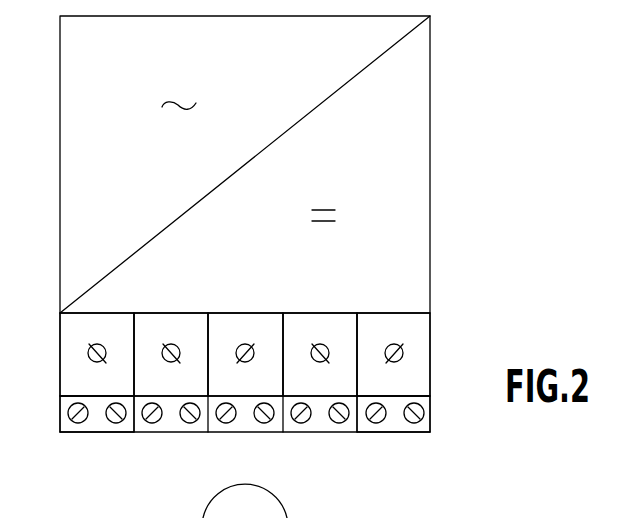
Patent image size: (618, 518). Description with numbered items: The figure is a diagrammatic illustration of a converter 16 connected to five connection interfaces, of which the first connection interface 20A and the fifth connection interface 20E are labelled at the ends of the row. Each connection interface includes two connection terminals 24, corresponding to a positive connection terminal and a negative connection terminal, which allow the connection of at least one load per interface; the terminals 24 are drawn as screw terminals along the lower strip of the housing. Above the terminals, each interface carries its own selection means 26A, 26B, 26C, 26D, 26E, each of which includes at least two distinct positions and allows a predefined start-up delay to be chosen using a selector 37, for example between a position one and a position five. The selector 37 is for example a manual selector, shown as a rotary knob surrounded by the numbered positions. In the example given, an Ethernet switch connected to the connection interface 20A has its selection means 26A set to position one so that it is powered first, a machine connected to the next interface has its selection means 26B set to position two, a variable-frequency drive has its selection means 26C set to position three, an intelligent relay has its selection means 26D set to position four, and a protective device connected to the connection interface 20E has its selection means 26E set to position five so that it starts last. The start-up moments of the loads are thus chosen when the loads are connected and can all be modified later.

The converter 16 is at (452, 105).
The selection means 26A is at (70, 340).
The selection means 26B is at (170, 320).
The selection means 26C is at (243, 321).
The selection means 26D is at (317, 320).
The selection means 26E is at (422, 327).
The selector 37 is at (93, 340).
The connection interface 20A is at (94, 441).
The connection interface 20E is at (388, 452).
The connection terminals 24 is at (77, 423).